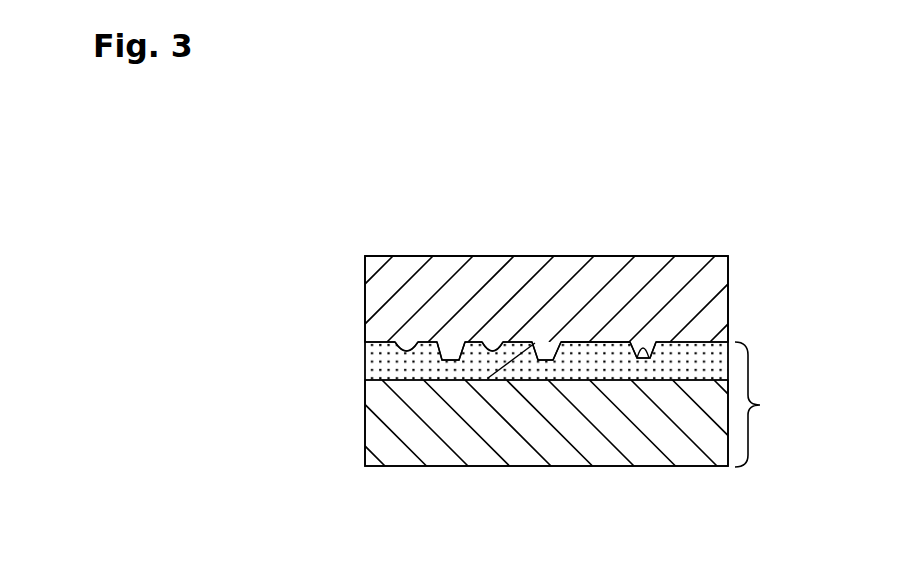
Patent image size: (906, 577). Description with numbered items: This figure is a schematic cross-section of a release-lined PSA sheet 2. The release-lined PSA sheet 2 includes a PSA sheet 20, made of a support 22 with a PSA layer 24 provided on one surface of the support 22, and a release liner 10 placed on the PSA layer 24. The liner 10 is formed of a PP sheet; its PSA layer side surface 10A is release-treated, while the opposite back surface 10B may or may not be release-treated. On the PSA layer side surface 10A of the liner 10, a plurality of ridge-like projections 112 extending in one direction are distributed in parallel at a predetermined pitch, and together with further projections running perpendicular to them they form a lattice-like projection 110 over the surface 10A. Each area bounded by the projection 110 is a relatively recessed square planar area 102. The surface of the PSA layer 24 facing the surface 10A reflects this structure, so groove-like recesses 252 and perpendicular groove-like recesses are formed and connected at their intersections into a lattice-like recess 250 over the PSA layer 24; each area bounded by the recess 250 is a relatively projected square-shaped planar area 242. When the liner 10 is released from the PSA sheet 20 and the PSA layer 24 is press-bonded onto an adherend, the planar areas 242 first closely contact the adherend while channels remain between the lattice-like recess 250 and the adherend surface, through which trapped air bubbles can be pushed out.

The release-lined PSA sheet 2 is at (790, 238).
The release liner 10 is at (717, 308).
The PSA layer side surface 10A is at (362, 343).
The back surface 10B is at (406, 256).
The PSA sheet 20 is at (582, 404).
The support 22 is at (375, 427).
The PSA layer 24 is at (382, 370).
The recessed square planar area 102 is at (418, 346).
The lattice-like projection 110 is at (548, 361).
The ridge-like projections 112 is at (442, 358).
The projected square-shaped planar area 242 is at (598, 342).
The lattice-like recess 250 is at (652, 347).
The groove-like recesses 252 is at (648, 358).